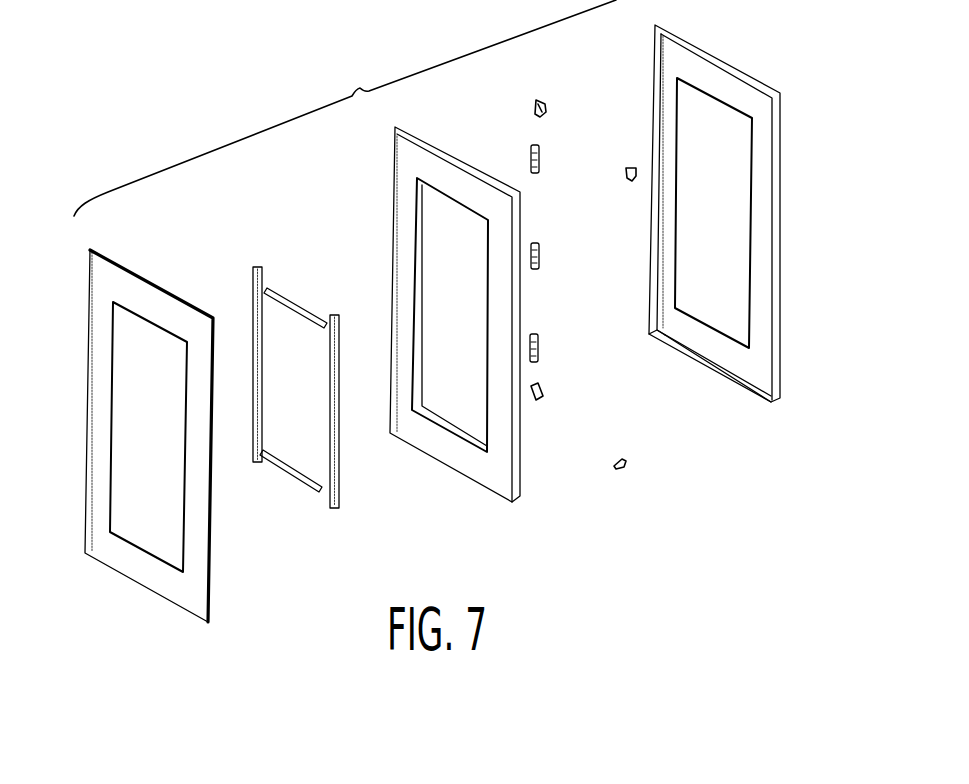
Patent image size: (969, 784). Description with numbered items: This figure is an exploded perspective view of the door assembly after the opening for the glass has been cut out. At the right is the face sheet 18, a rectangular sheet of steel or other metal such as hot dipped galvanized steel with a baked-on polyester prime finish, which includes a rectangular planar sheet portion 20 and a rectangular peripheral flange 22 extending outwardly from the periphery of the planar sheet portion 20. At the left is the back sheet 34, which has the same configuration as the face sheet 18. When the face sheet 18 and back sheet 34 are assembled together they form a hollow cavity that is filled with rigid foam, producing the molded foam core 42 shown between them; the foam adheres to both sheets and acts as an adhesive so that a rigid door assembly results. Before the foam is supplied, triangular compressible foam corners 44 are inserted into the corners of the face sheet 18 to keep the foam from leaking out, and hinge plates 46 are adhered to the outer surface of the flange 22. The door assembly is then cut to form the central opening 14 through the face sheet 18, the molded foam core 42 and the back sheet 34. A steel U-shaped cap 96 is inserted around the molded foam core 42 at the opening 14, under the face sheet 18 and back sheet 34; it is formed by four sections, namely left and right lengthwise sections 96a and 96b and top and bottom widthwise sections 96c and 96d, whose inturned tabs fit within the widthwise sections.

The opening 14 is at (113, 428).
The face sheet 18 is at (670, 353).
The planar sheet portion 20 is at (737, 226).
The peripheral flange 22 is at (717, 379).
The back sheet 34 is at (94, 281).
The molded foam core 42 is at (401, 158).
The compressible foam corners 44 is at (546, 101).
The hinge plates 46 is at (542, 256).
The U-shaped cap 96 is at (264, 402).
The left lengthwise section 96a is at (253, 291).
The right lengthwise section 96b is at (330, 392).
The top widthwise section 96c is at (290, 289).
The bottom widthwise section 96d is at (291, 480).